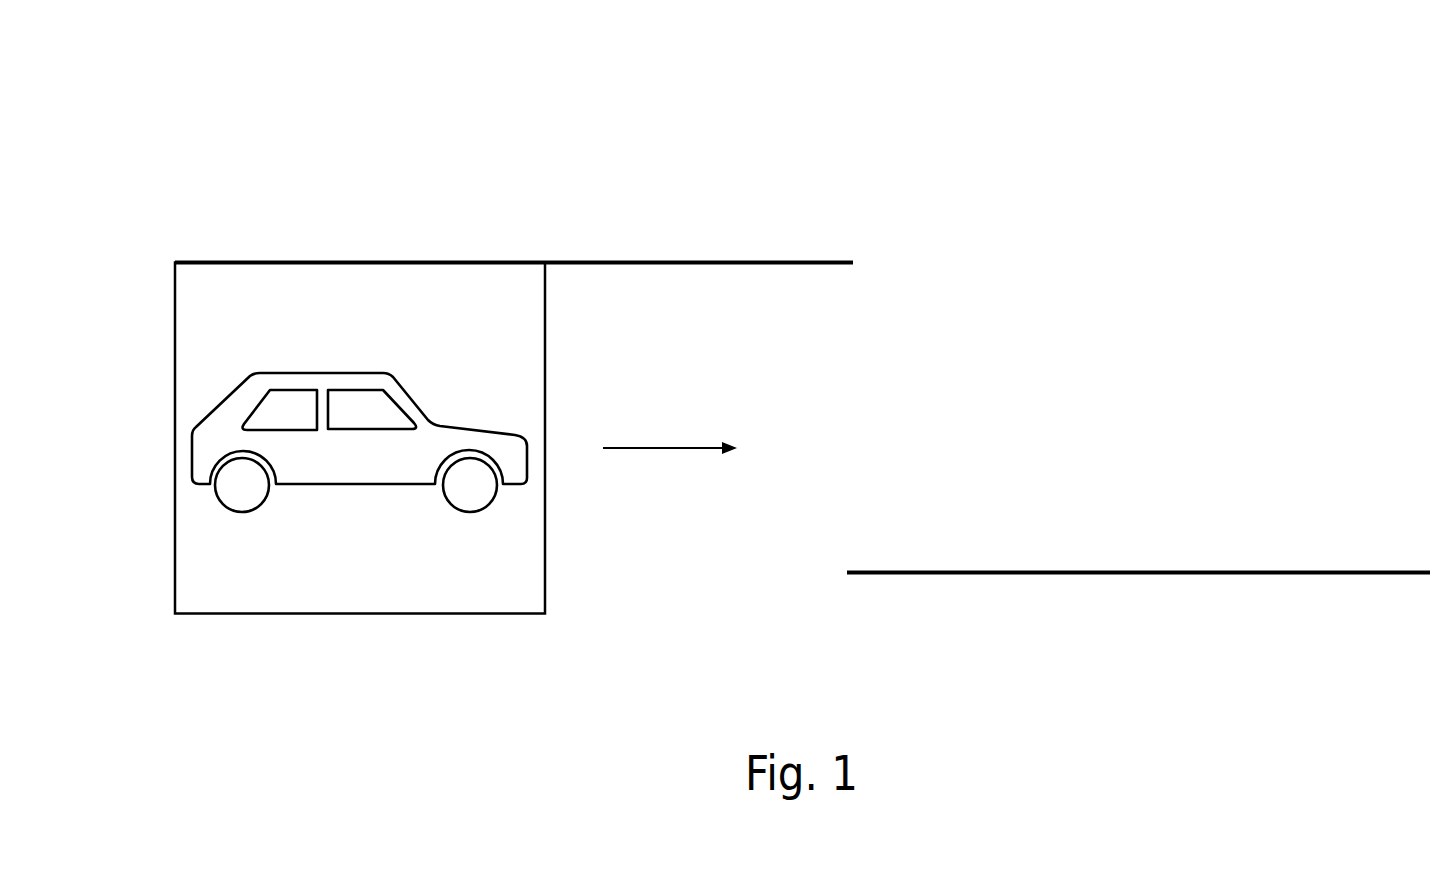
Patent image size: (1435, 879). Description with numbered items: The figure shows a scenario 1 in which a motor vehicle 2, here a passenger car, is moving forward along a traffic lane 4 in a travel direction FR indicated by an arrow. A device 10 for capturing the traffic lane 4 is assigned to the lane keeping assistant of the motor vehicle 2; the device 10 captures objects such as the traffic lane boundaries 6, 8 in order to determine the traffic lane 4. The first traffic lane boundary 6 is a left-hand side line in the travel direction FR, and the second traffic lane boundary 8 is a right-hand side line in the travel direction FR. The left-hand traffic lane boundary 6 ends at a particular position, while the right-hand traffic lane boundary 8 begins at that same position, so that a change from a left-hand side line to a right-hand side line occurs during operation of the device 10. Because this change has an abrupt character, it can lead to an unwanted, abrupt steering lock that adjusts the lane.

The scenario 1 is at (797, 178).
The motor vehicle 2 is at (233, 408).
The traffic lane 4 is at (672, 124).
The first traffic lane boundary 6 is at (562, 260).
The second traffic lane boundary 8 is at (897, 575).
The device for capturing the traffic lane 10 is at (332, 422).